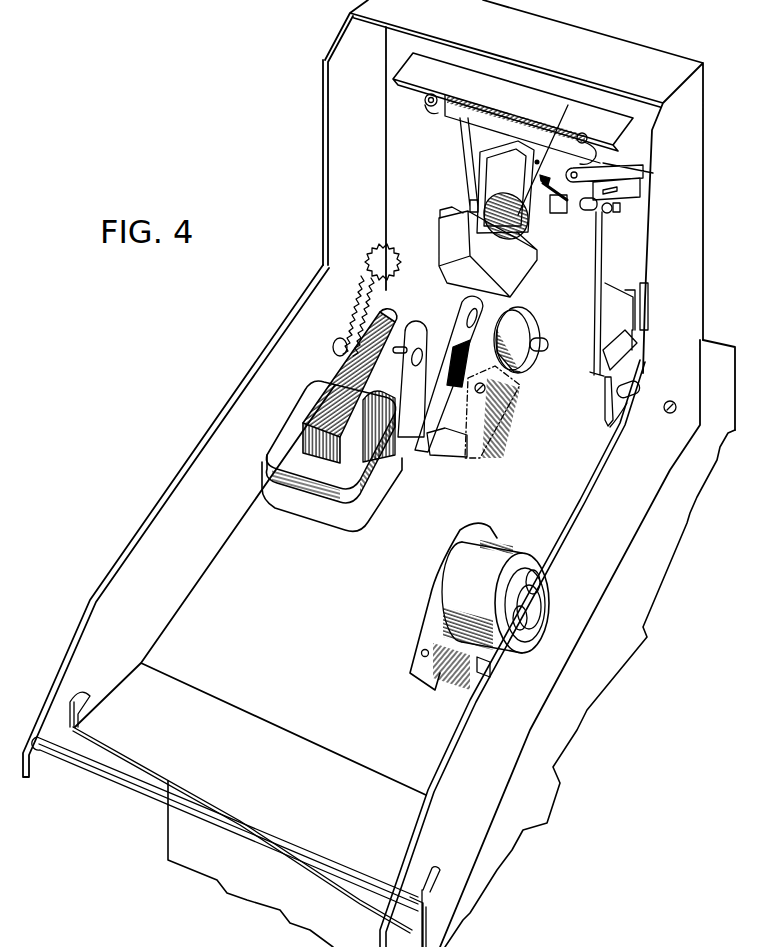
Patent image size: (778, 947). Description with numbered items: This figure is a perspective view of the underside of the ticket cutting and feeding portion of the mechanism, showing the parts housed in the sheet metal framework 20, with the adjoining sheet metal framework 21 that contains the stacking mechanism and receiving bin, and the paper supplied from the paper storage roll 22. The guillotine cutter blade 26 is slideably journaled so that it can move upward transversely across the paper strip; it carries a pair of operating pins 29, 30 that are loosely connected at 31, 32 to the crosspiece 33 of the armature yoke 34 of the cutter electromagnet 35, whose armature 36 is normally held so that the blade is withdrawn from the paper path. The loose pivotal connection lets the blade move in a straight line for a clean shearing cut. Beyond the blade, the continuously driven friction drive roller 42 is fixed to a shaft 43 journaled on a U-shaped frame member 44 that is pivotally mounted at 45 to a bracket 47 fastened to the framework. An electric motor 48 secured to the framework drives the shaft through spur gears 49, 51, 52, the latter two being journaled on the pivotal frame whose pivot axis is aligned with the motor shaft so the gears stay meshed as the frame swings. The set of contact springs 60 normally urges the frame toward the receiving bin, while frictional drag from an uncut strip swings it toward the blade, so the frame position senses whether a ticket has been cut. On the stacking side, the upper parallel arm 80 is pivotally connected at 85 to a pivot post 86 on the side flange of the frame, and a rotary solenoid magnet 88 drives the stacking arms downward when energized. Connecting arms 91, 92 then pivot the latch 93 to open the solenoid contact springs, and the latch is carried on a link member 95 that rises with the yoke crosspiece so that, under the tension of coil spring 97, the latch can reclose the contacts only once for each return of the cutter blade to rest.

The framework 20 is at (148, 528).
The sheet metal framework 21 is at (556, 769).
The paper storage roll 22 is at (704, 229).
The guillotine cutter blade 26 is at (407, 68).
The operating pin 29 is at (424, 102).
The operating pin 30 is at (568, 135).
The loose connection 31 is at (436, 113).
The loose connection 32 is at (604, 153).
The crosspiece 33 is at (488, 118).
The armature yoke 34 is at (466, 172).
The electromagnet 35 is at (447, 226).
The armature 36 is at (462, 248).
The friction drive roller 42 is at (525, 360).
The shaft 43 is at (543, 348).
The U-shaped frame member 44 is at (453, 333).
The pivot point 45 is at (473, 400).
The bracket 47 is at (467, 433).
The electric motor 48 is at (330, 505).
The spur gear 49 is at (333, 347).
The spur gear 51 is at (355, 306).
The spur gear 52 is at (380, 268).
The set of contact springs 60 is at (423, 313).
The parallel arm 80 is at (627, 410).
The pivotal connection 85 is at (607, 392).
The pivot post 86 is at (642, 388).
The rotary solenoid magnet 88 is at (513, 541).
The connecting arm 91 is at (622, 368).
The connecting arm 92 is at (604, 273).
The latch 93 is at (568, 200).
The link member 95 is at (566, 126).
The coil spring 97 is at (541, 180).